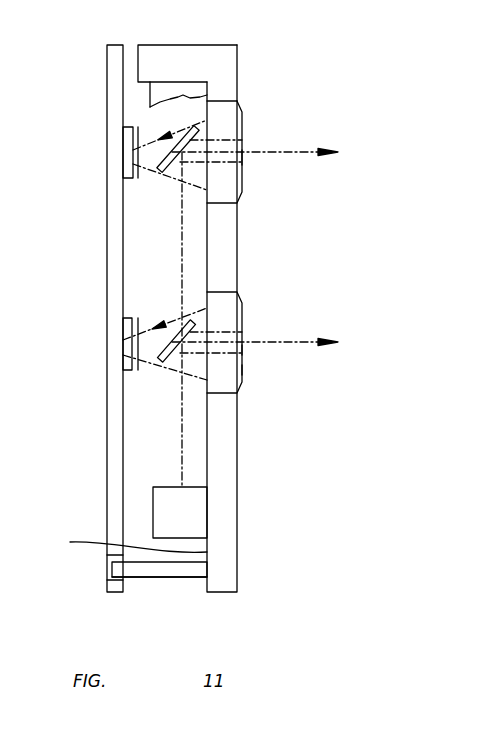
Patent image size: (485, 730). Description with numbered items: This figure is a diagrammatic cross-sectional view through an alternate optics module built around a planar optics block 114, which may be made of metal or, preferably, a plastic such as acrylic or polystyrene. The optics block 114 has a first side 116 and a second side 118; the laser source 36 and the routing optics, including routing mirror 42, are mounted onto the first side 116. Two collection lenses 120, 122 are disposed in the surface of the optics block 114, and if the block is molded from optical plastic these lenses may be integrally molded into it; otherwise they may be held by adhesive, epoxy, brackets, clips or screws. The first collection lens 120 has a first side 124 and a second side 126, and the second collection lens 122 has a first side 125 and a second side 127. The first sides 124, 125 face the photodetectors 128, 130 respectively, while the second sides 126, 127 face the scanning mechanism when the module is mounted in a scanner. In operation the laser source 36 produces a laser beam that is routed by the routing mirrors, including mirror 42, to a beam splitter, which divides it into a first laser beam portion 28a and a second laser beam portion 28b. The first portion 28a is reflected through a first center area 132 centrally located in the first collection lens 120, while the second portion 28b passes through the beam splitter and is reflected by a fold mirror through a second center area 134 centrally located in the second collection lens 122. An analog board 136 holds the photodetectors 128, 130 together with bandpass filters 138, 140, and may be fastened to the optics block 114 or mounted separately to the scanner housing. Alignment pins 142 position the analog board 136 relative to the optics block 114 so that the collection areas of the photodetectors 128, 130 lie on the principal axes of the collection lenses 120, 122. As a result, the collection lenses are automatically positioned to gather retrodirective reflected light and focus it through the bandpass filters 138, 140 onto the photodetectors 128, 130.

The first laser beam portion 28a is at (282, 342).
The second laser beam portion 28b is at (282, 150).
The laser source 36 is at (157, 95).
The routing mirror 42 is at (168, 502).
The optics block 114 is at (218, 482).
The first side 116 is at (117, 541).
The second side 118 is at (235, 552).
The first collection lens 120 is at (233, 370).
The second collection lens 122 is at (233, 125).
The first side of first collection lens 124 is at (207, 307).
The first side of second collection lens 125 is at (206, 120).
The second side of first collection lens 126 is at (237, 310).
The second side of second collection lens 127 is at (240, 103).
The first photodetector 128 is at (123, 360).
The second photodetector 130 is at (125, 152).
The first center area 132 is at (235, 348).
The second center area 134 is at (235, 157).
The analog board 136 is at (108, 475).
The first bandpass filter 138 is at (143, 323).
The second bandpass filter 140 is at (141, 166).
The alignment pins 142 is at (138, 578).